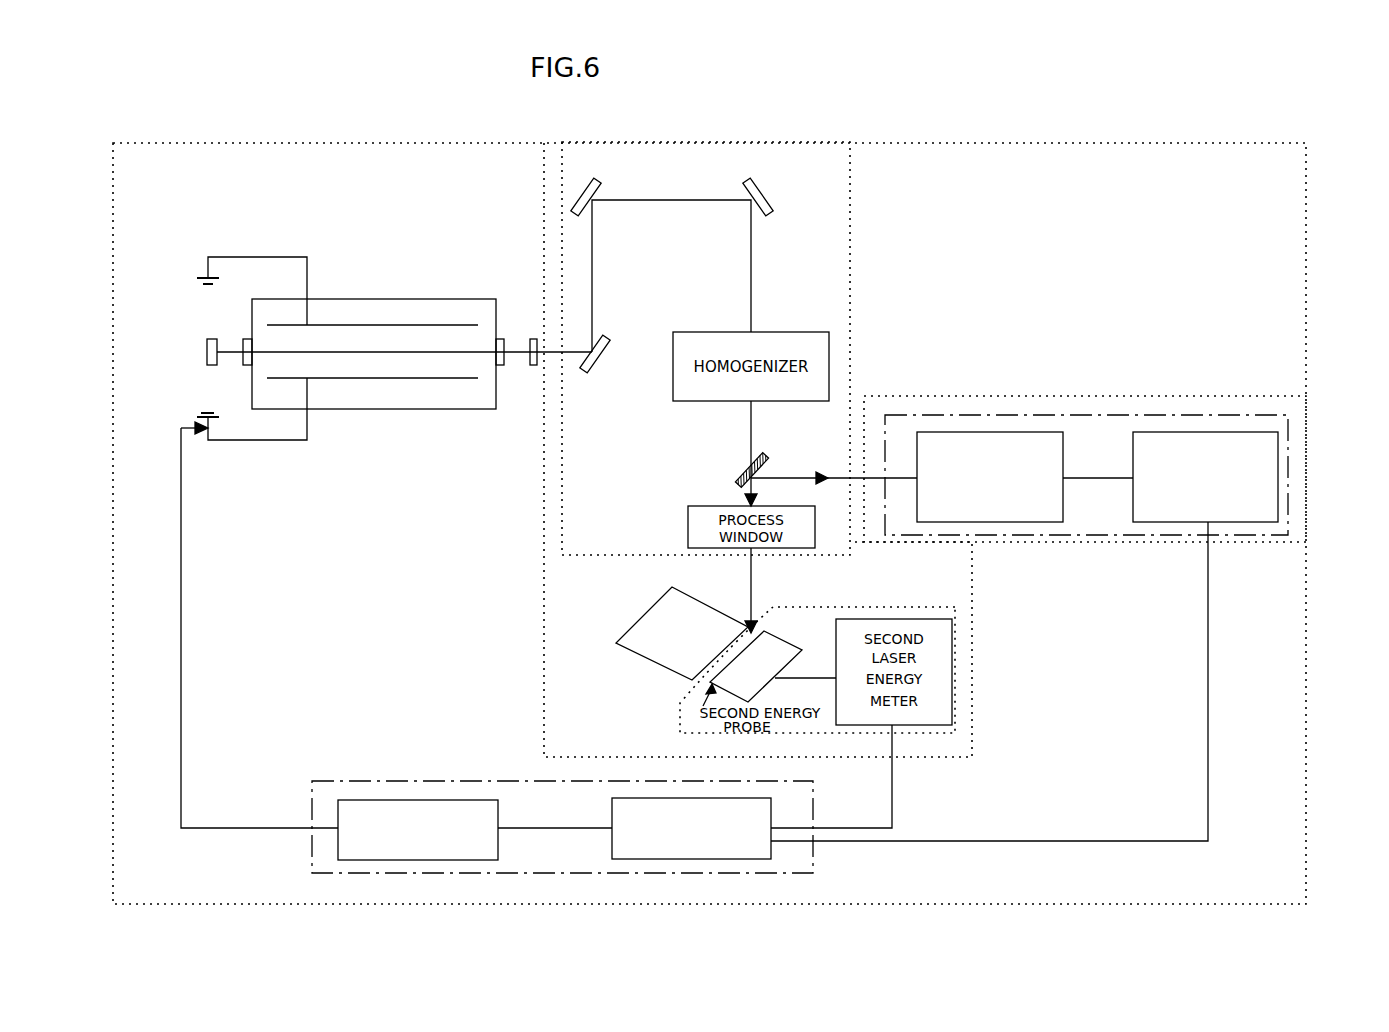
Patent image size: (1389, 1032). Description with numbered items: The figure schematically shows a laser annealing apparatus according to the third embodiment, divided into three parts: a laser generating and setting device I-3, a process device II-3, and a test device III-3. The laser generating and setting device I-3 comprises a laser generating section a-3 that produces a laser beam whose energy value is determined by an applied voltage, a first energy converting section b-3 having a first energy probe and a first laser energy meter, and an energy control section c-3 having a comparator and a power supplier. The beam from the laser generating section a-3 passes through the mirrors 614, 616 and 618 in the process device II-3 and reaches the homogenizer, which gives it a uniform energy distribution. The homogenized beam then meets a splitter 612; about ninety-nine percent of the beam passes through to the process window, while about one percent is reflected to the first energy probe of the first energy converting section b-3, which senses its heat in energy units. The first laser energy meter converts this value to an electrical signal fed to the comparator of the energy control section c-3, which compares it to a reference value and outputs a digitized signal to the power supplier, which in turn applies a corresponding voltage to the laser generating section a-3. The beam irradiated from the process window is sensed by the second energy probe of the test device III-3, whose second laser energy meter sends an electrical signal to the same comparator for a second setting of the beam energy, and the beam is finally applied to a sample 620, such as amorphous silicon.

The splitter 612 is at (767, 462).
The mirror 614 is at (598, 360).
The mirror 616 is at (598, 180).
The mirror 618 is at (763, 192).
The sample 620 is at (647, 610).
The laser generating section a-3 is at (412, 409).
The first energy converting section b-3 is at (1135, 539).
The energy control section c-3 is at (395, 780).
The laser generating and setting device I-3 is at (1306, 668).
The process device II-3 is at (852, 317).
The test device III-3 is at (877, 607).